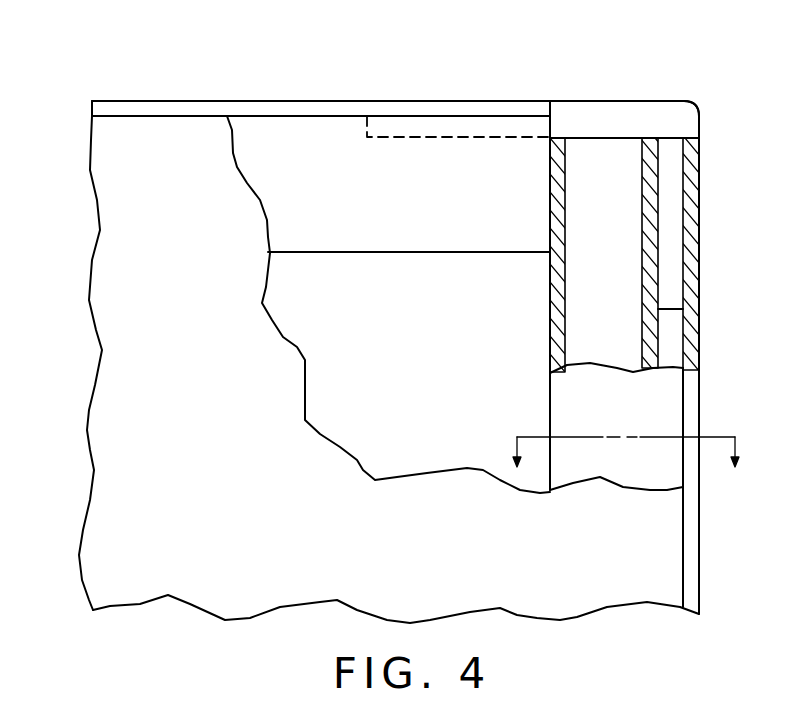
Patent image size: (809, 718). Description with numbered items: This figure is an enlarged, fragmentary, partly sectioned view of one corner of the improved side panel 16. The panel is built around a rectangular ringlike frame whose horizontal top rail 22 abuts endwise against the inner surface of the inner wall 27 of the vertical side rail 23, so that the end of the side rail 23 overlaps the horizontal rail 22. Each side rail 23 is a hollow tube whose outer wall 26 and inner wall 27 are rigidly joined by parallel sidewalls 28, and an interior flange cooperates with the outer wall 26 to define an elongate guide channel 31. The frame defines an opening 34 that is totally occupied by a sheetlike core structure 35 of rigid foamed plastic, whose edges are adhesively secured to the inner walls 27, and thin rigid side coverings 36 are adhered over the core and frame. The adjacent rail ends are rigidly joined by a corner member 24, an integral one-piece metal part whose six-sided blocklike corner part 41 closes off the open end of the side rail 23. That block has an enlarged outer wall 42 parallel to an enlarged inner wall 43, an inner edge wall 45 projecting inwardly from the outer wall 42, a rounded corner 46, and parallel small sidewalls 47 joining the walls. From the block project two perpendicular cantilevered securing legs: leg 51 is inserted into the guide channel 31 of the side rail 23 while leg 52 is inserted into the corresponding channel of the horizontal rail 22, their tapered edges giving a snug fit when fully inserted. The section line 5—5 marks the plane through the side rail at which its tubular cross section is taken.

The side panel 16 is at (178, 84).
The top and bottom rails 22 is at (285, 98).
The side rails 23 is at (700, 312).
The corner member 24 is at (668, 92).
The outer wall 26 is at (318, 108).
The inner wall 27 is at (550, 320).
The sidewalls 28 is at (302, 218).
The guide channel 31 is at (672, 337).
The opening 34 is at (548, 272).
The core structure 35 is at (407, 290).
The side coverings 36 is at (125, 246).
The corner part 41 is at (610, 115).
The outer wall 42 is at (583, 100).
The inner wall 43 is at (595, 142).
The inner edge wall 45 is at (548, 125).
The rounded corner 46 is at (697, 100).
The small sidewalls 47 is at (655, 120).
The securing leg 51 is at (673, 210).
The securing leg 52 is at (461, 130).
The section line 5- 5 is at (621, 452).